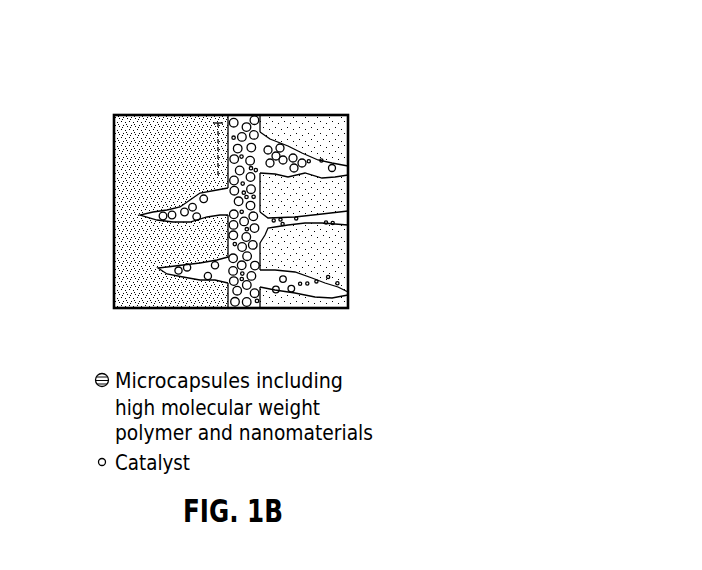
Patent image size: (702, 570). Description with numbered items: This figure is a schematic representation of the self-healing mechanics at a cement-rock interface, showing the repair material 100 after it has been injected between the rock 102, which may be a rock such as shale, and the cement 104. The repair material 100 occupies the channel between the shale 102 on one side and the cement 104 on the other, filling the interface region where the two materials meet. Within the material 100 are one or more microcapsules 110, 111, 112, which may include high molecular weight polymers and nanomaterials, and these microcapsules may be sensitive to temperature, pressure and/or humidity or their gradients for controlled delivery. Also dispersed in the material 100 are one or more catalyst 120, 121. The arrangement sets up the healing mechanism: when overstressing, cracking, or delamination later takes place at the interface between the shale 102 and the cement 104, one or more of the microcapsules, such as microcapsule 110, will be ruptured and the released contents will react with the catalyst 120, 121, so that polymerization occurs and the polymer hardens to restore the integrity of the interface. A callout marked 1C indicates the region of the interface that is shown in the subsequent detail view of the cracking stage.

The repair material 100 is at (262, 131).
The rock 102 is at (122, 280).
The cement 104 is at (335, 262).
The microcapsule 110 is at (262, 200).
The microcapsule 111 is at (222, 138).
The microcapsule 112 is at (218, 273).
The catalyst 120 is at (231, 138).
The catalyst 121 is at (287, 147).
The detail view reference FIG. 1C is at (233, 133).